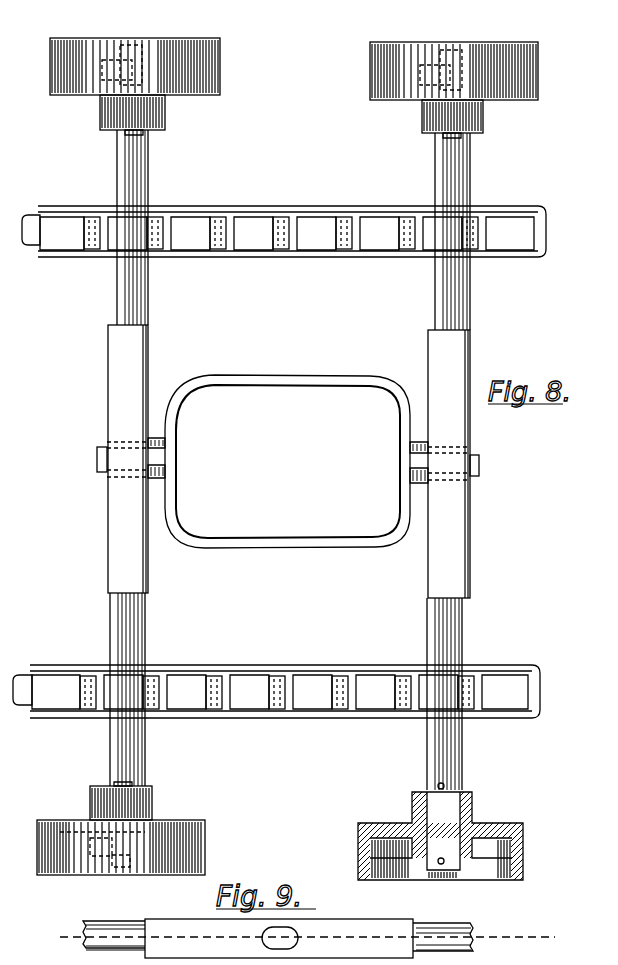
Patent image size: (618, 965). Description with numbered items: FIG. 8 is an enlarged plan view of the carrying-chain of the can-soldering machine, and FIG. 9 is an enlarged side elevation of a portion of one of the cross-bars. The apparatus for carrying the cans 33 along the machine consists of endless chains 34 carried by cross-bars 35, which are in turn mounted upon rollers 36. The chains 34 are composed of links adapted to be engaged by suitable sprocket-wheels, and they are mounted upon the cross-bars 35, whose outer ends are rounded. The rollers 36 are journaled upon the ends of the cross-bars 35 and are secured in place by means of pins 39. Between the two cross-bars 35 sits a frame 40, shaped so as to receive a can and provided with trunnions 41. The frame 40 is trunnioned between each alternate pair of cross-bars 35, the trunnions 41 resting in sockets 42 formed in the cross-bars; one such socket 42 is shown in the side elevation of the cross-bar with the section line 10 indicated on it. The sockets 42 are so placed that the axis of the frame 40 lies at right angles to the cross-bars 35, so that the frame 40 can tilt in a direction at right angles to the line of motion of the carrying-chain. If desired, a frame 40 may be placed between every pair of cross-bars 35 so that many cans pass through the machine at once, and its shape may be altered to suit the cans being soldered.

In FIG. 9, the rod 10 is at (299, 938).
In FIG. 8, the apparatus for carrying the cans 33 is at (289, 443).
In FIG. 8, the endless chains 34 is at (268, 258).
In FIG. 8, the cross-bars 35 is at (148, 300).
In FIG. 8, the rollers 36 is at (205, 95).
In FIG. 8, the pins 39 is at (147, 135).
In FIG. 8, the frame 40 is at (335, 378).
In FIG. 8, the trunnions 41 is at (98, 468).
In FIG. 9, the sockets 42 is at (298, 941).